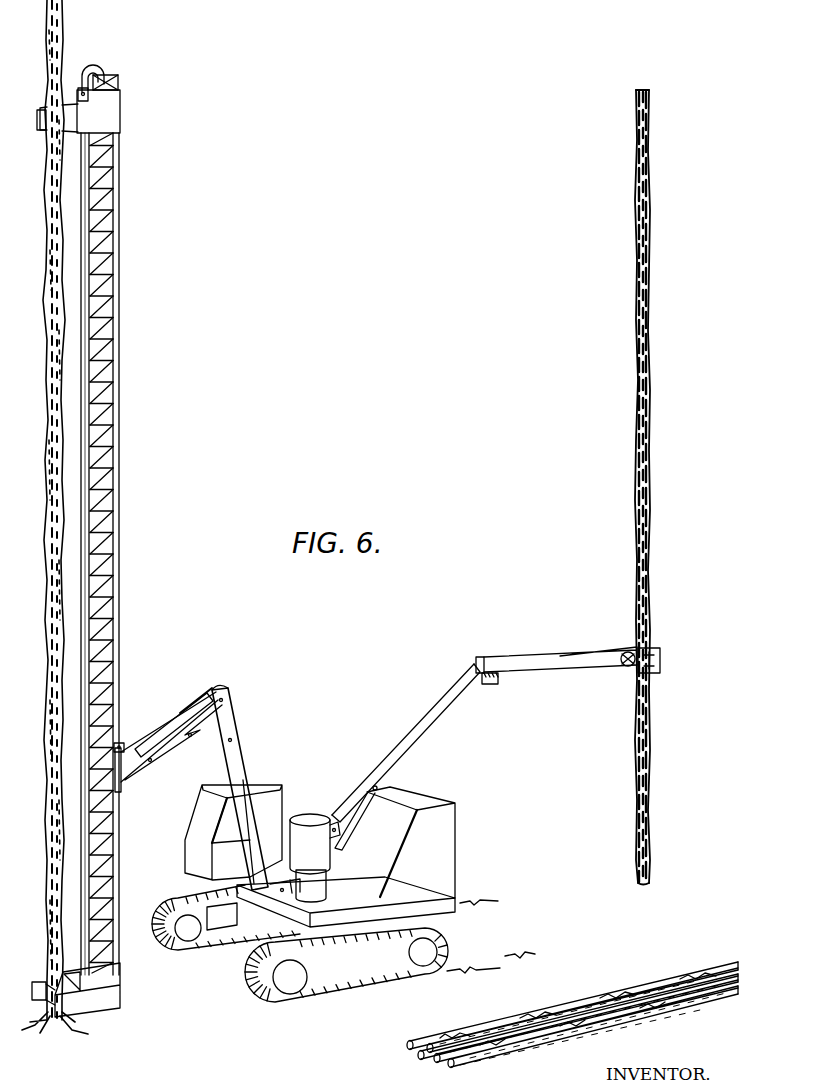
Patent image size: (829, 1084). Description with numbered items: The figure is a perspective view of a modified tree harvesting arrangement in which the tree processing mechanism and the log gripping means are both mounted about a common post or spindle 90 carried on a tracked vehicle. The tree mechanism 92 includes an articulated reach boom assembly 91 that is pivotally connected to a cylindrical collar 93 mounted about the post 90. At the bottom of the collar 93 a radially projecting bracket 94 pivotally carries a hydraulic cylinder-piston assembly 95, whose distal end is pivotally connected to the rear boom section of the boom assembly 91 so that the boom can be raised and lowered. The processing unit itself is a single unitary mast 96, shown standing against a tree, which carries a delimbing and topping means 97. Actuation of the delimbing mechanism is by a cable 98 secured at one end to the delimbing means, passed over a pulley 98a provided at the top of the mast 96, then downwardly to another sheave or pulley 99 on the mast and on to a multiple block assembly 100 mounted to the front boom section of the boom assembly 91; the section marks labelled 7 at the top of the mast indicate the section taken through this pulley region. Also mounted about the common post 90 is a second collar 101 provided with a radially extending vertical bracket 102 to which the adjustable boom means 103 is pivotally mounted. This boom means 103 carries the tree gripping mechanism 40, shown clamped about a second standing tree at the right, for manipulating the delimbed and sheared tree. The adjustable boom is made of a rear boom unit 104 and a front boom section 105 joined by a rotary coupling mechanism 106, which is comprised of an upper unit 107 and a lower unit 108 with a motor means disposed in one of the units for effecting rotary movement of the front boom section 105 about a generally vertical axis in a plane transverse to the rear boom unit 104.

The section line 7- 7 is at (75, 79).
The tree gripping mechanism 40 is at (662, 660).
The common post or spindle 90 is at (312, 813).
The articulated reach boom assembly 91 is at (250, 735).
The tree mechanism 92 is at (126, 431).
The cylindrical collar 93 is at (322, 899).
The radially projecting bracket 94 is at (271, 893).
The hydraulic cylinder-piston assembly 95 is at (252, 865).
The single unitary mast 96 is at (119, 312).
The delimbing and topping means 97 is at (122, 117).
The cable 98 is at (93, 62).
The pulley 98a is at (106, 67).
The sheave or pulley 99 is at (120, 750).
The multiple block assembly 100 is at (158, 722).
The collar 101 is at (320, 862).
The radially extending vertical bracket 102 is at (334, 848).
The adjustable boom means 103 is at (452, 729).
The rear boom unit 104 is at (410, 742).
The front boom section 105 is at (553, 657).
The rotary coupling mechanism 106 is at (500, 669).
The upper unit 107 is at (479, 666).
The lower unit 108 is at (488, 682).